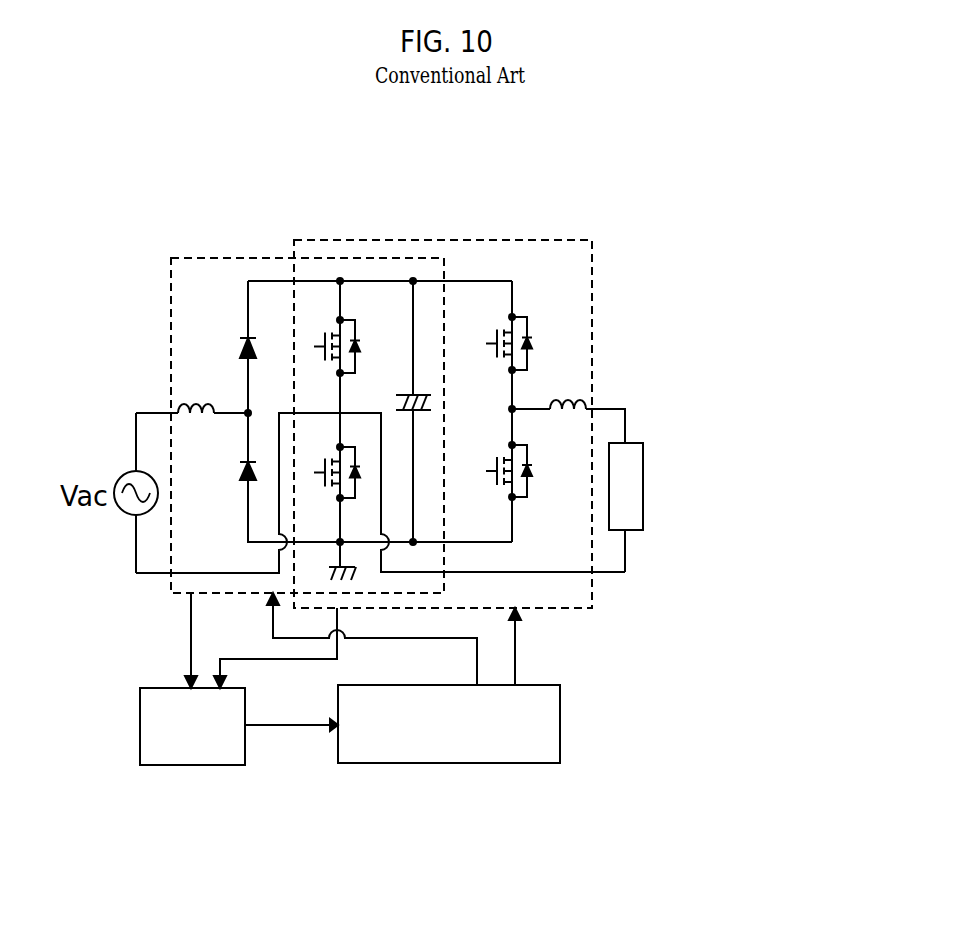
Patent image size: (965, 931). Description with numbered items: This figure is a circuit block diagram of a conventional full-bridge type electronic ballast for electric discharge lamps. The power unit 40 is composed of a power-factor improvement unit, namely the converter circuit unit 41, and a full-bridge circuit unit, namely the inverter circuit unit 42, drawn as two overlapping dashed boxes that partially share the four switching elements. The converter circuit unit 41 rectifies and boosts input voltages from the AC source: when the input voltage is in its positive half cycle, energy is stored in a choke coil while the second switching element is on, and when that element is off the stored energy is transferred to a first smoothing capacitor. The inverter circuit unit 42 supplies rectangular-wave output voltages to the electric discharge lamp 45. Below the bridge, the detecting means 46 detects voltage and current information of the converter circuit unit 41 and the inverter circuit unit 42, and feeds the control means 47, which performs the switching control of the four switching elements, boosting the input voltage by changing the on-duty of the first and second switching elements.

The power unit 40 is at (286, 234).
The converter circuit unit 41 is at (201, 257).
The inverter circuit unit 42 is at (533, 240).
The electric discharge lamp 45 is at (643, 480).
The detecting means 46 is at (195, 765).
The control means 47 is at (560, 718).